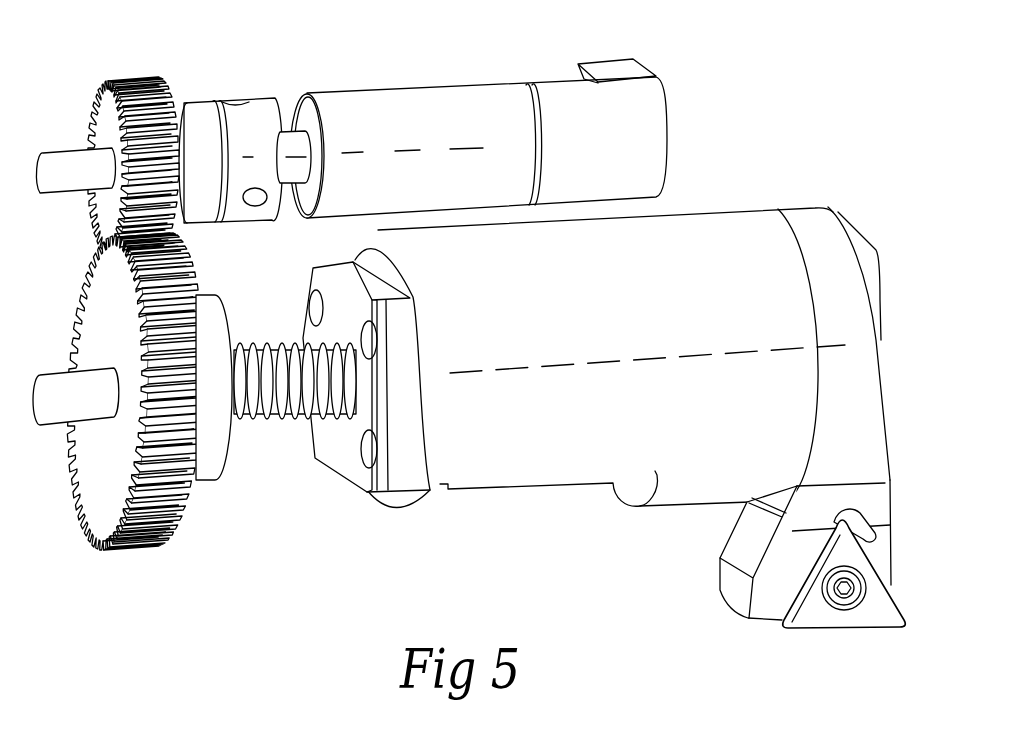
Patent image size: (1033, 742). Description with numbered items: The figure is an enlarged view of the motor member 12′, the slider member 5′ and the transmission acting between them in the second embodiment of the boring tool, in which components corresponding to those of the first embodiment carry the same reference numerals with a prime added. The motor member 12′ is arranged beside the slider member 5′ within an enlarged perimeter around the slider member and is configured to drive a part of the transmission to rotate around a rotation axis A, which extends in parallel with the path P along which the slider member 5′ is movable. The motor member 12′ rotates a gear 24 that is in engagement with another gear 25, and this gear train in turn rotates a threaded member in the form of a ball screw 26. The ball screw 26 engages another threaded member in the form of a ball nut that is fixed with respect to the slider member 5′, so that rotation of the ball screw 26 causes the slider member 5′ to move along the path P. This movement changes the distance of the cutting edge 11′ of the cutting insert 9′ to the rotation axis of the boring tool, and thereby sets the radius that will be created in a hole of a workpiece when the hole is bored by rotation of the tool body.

The motor member 12′ is at (428, 92).
The slider member 5′ is at (530, 480).
The path P is at (852, 345).
The cutting edge 11′ is at (908, 623).
The cutting insert 9′ is at (817, 613).
The ball screw 26 is at (278, 424).
The gear 24 is at (86, 113).
The gear 25 is at (192, 512).
The rotation axis A is at (342, 153).